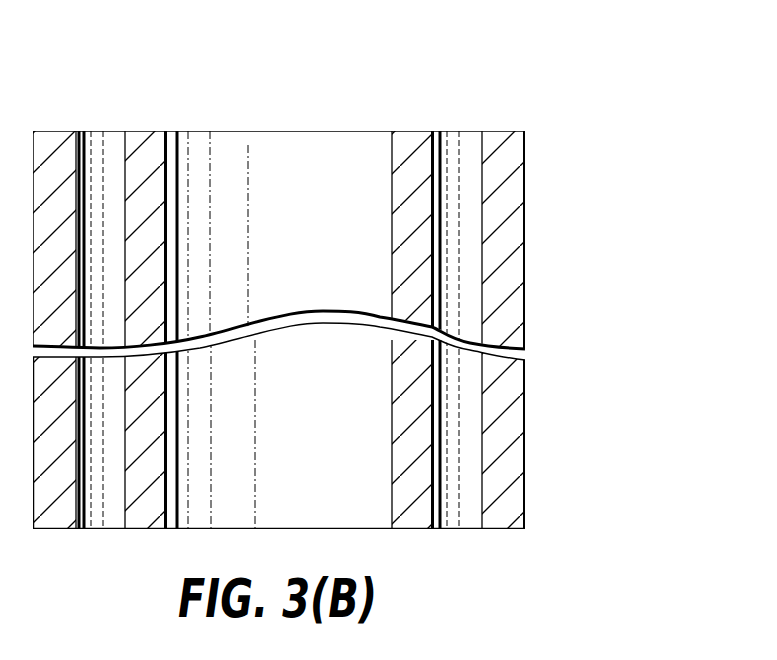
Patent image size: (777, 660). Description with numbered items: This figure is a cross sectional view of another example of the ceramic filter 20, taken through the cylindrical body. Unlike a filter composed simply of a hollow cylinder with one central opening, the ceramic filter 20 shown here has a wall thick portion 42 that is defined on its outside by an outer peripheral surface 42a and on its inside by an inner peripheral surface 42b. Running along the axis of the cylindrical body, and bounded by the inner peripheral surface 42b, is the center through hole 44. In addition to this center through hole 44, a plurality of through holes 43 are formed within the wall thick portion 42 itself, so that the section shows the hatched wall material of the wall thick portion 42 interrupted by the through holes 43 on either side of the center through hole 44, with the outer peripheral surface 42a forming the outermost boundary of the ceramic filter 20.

The ceramic filter 20 is at (376, 86).
The wall thick portion 42 is at (147, 163).
The outer peripheral surface 42a is at (525, 295).
The inner peripheral surface 42b is at (392, 226).
The through holes 43 is at (97, 160).
The center through hole 44 is at (258, 170).